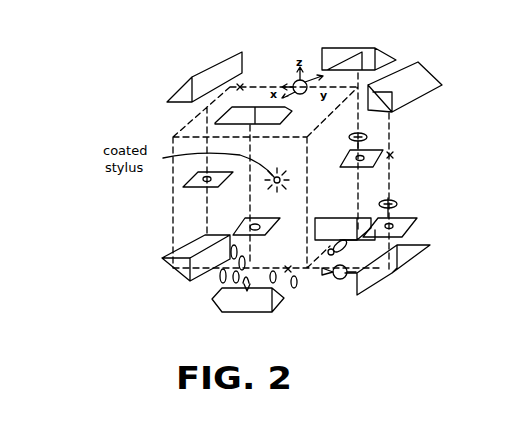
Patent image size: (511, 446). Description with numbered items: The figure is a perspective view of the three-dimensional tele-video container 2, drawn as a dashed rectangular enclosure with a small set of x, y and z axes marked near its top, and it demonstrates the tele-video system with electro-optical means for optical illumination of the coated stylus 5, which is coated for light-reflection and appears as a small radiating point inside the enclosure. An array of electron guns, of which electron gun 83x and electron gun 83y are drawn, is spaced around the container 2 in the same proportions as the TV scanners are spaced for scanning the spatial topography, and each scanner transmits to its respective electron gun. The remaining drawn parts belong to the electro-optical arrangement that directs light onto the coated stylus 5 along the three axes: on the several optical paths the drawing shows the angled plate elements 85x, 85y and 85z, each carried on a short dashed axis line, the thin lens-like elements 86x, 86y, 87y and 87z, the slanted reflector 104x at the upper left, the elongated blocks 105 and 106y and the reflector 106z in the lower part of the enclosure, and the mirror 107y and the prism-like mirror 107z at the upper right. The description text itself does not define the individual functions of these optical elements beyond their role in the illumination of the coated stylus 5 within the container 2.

The container 2 is at (230, 87).
The coated stylus 5 is at (280, 172).
The electron gun 83x is at (343, 279).
The electron gun 83y is at (328, 252).
The mirror (x and z) 85x is at (183, 190).
The mirror and lens (y) 85y is at (390, 155).
The mirror and lens (z) 85z is at (405, 208).
The lens (x) 86x is at (234, 245).
The lens (y) 86y is at (298, 288).
The lens (y) 87y is at (268, 270).
The lens / detector block (z) 87z is at (246, 265).
The reflector (x and z) 104x is at (171, 77).
The detector block (x and z) 105 is at (163, 265).
The detector box (y) 106y is at (343, 223).
The reflector (z) 106z is at (405, 272).
The mirror (y) 107y is at (359, 51).
The prism mirror (z) 107z is at (420, 88).